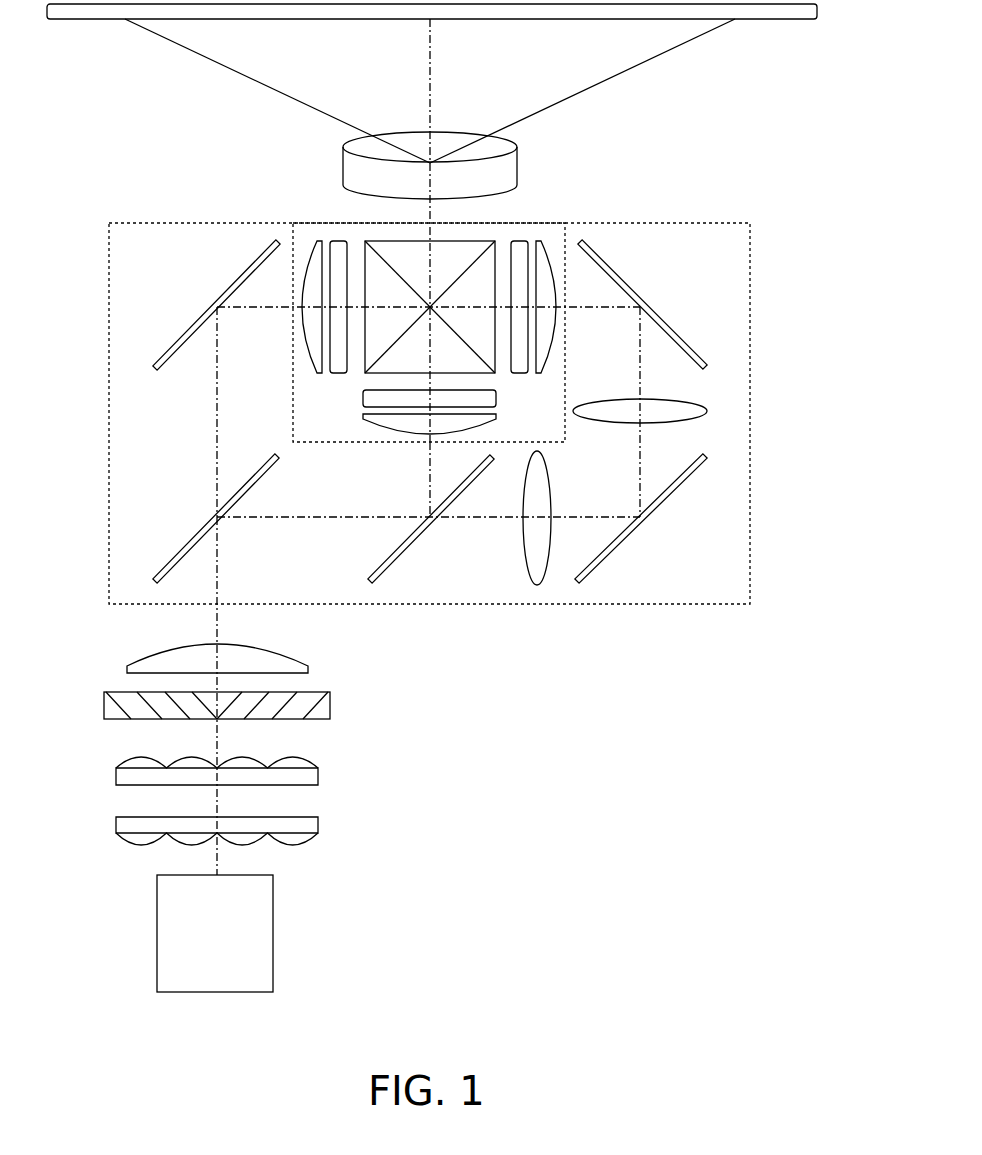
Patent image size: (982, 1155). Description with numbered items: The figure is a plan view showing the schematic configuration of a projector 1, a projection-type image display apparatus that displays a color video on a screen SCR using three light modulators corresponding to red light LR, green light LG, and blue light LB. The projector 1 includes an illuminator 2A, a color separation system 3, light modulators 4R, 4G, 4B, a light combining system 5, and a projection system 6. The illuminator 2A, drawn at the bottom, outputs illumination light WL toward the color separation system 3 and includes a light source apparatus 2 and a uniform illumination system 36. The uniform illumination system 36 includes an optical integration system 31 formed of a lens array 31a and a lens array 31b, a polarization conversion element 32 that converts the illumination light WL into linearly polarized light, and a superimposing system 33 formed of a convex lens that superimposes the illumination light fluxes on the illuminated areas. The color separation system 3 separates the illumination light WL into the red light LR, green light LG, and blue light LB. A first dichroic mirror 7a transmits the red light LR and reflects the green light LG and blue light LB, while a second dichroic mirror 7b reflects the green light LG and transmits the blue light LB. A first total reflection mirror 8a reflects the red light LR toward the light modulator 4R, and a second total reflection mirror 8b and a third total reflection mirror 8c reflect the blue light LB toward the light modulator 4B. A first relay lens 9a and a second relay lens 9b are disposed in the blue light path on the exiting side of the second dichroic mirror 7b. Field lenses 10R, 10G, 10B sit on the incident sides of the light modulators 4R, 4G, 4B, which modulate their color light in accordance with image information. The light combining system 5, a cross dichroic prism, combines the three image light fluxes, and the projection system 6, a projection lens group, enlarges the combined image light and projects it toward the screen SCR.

The projector 1 is at (765, 196).
The light source apparatus 2 is at (275, 897).
The illuminator 2A is at (493, 708).
The color separation system 3 is at (109, 360).
The light modulator 4R is at (339, 241).
The light modulator 4G is at (363, 398).
The light modulator 4B is at (521, 241).
The light combining system 5 is at (455, 245).
The projection system 6 is at (418, 145).
The first dichroic mirror 7a is at (185, 550).
The second dichroic mirror 7b is at (410, 548).
The first total reflection mirror 8a is at (195, 322).
The second total reflection mirror 8b is at (662, 503).
The third total reflection mirror 8c is at (655, 320).
The first relay lens 9a is at (525, 537).
The second relay lens 9b is at (700, 399).
The field lens 10R is at (312, 242).
The field lens 10G is at (365, 430).
The field lens 10B is at (545, 242).
The optical integration system 31 is at (396, 762).
The lens array 31a is at (320, 826).
The lens array 31b is at (320, 776).
The polarization conversion element 32 is at (331, 705).
The superimposing system 33 is at (300, 655).
The uniform illumination system 36 is at (442, 638).
The screen SCR is at (783, 20).
The illumination light WL is at (227, 540).
The red light LR is at (217, 440).
The green light LG is at (430, 478).
The blue light LB is at (640, 475).